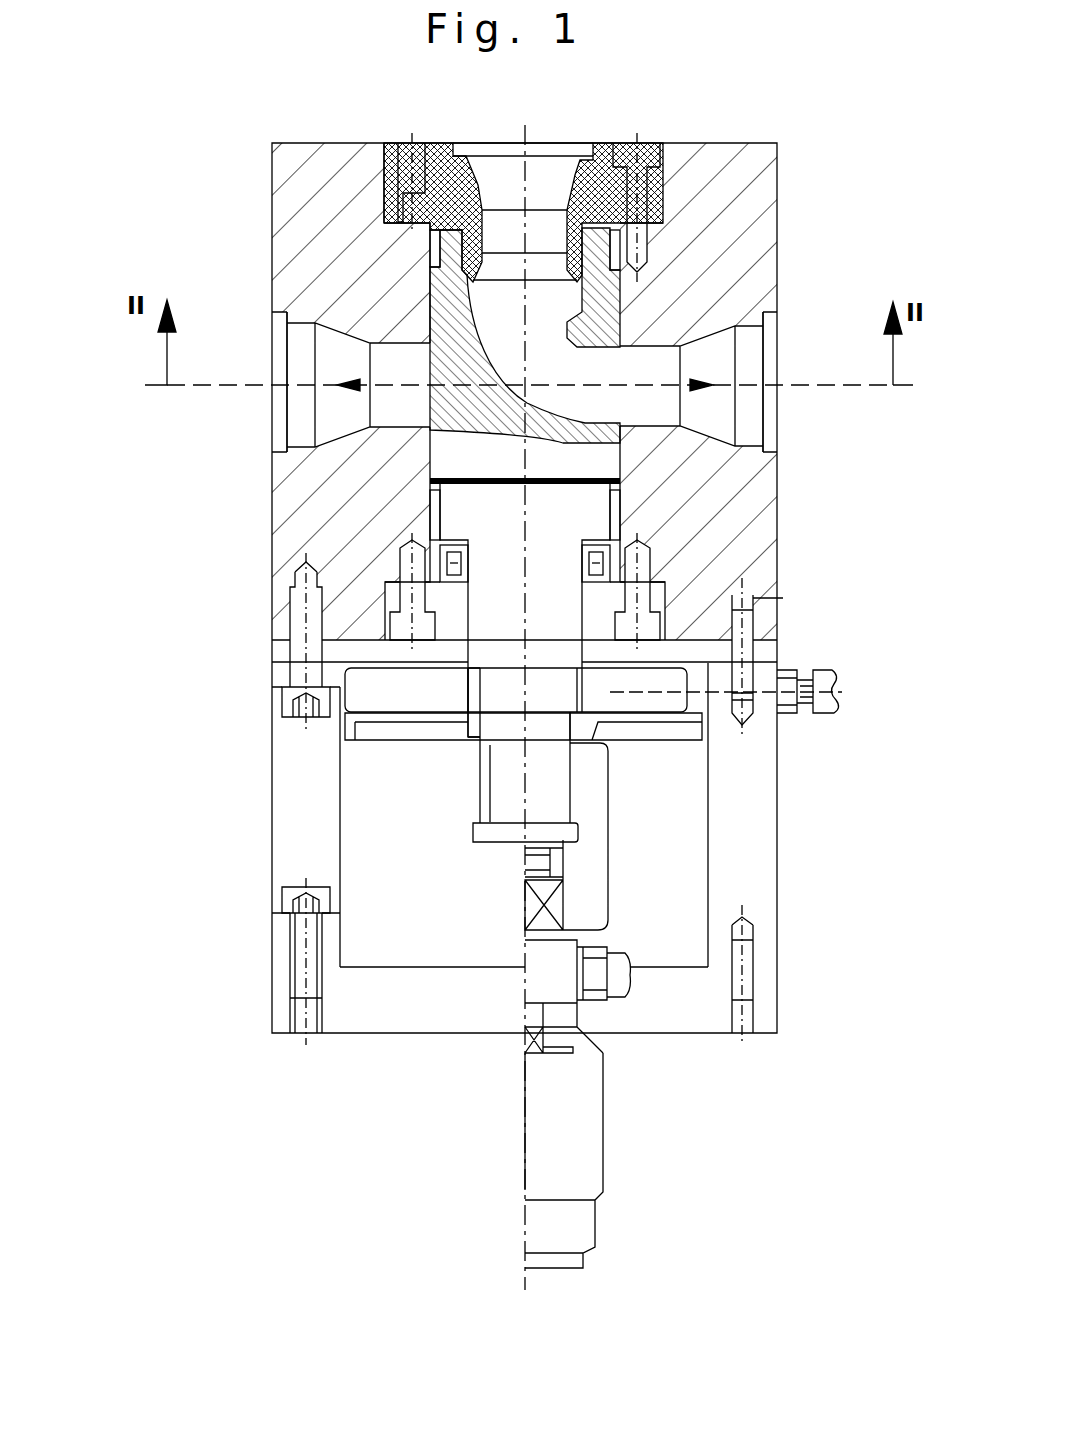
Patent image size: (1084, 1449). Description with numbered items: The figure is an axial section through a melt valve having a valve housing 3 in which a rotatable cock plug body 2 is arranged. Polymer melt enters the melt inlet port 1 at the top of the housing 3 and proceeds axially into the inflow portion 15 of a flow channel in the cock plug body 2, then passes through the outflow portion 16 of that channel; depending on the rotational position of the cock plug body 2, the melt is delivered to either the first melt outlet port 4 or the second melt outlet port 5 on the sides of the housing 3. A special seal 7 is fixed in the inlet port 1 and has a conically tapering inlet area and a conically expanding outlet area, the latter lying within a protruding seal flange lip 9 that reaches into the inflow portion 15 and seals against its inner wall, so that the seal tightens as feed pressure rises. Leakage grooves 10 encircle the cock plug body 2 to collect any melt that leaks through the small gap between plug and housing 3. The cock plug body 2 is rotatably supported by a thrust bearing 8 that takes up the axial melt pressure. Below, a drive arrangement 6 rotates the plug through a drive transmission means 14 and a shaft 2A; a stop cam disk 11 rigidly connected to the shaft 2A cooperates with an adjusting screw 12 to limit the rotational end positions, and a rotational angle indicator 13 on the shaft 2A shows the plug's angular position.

The melt inlet port 1 is at (563, 143).
The cock plug body 2 is at (595, 460).
The shaft 2A is at (513, 695).
The valve housing 3 is at (738, 265).
The first melt outlet port 4 is at (765, 422).
The melt outlet port 5 is at (278, 418).
The drive arrangement 6 is at (573, 1162).
The seal 7 is at (615, 273).
The thrust bearing 8 is at (413, 577).
The seal flange lip 9 is at (467, 258).
The leakage grooves 10 is at (432, 482).
The stop cam disk 11 is at (615, 692).
The adjusting screw 12 is at (822, 683).
The rotational angle indicator 13 is at (697, 735).
The drive transmission means 14 is at (562, 972).
The inflow portion 15 is at (488, 312).
The outflow portion 16 is at (595, 362).